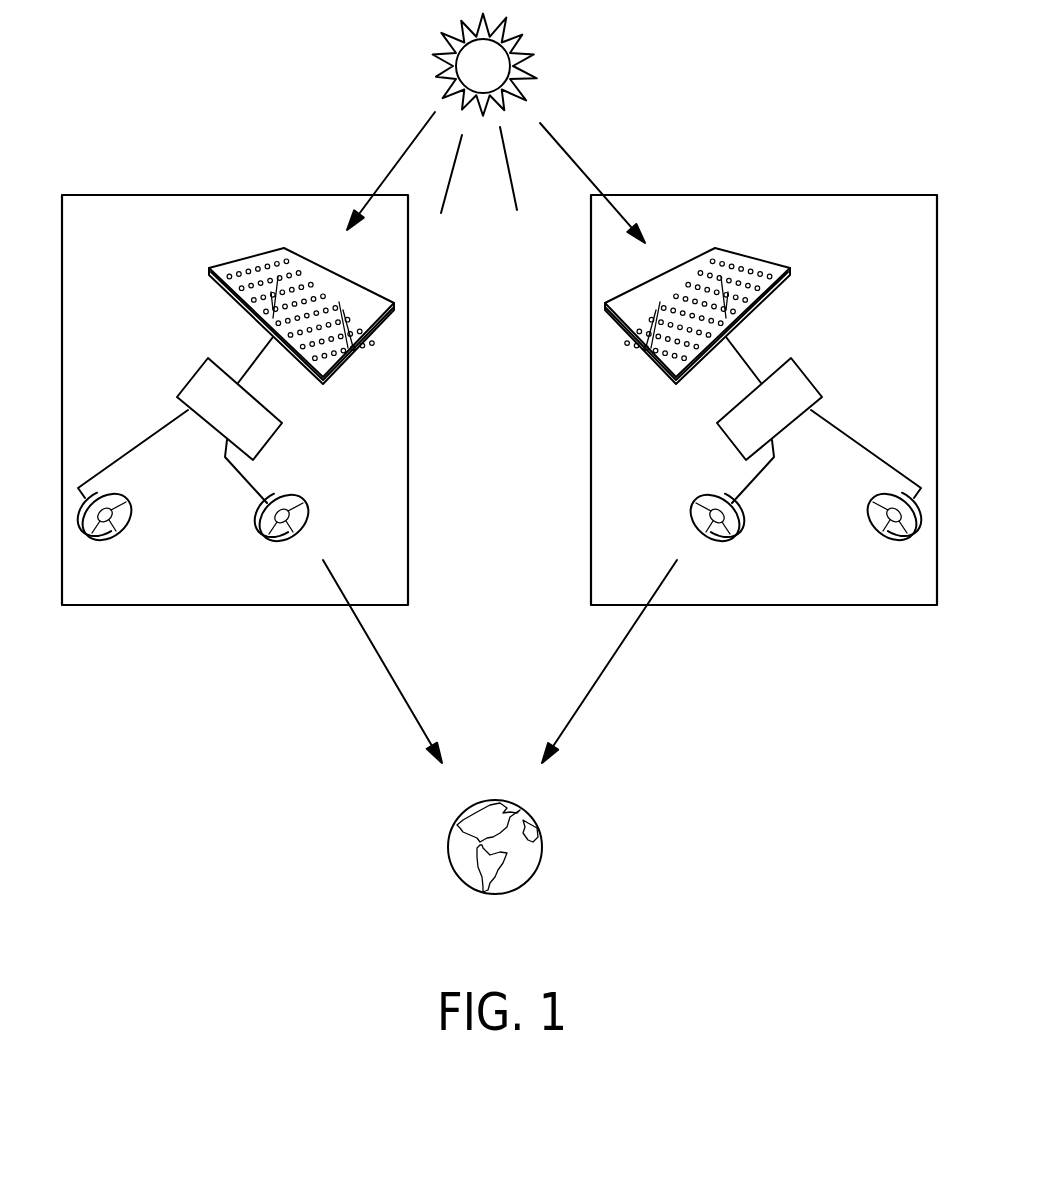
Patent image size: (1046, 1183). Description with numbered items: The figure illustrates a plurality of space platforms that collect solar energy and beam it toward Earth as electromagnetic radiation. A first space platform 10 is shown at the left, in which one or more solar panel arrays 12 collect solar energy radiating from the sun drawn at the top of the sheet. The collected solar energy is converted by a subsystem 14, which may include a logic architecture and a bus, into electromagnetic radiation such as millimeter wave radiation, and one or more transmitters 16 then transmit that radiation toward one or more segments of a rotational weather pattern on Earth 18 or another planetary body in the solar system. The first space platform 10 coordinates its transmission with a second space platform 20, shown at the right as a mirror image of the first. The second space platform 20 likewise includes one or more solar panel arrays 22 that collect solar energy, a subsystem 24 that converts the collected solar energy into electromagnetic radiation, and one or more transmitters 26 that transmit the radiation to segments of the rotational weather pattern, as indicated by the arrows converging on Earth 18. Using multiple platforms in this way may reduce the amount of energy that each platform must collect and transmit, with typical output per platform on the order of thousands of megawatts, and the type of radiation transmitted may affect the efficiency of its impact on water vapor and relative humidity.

The first space platform 10 is at (138, 195).
The solar panel arrays 12 is at (270, 250).
The subsystem 14 is at (280, 430).
The transmitters 16 is at (308, 510).
The Earth 18 is at (448, 842).
The second space platform 20 is at (835, 195).
The solar panel arrays 22 is at (617, 327).
The subsystem 24 is at (730, 435).
The transmitters 26 is at (722, 540).